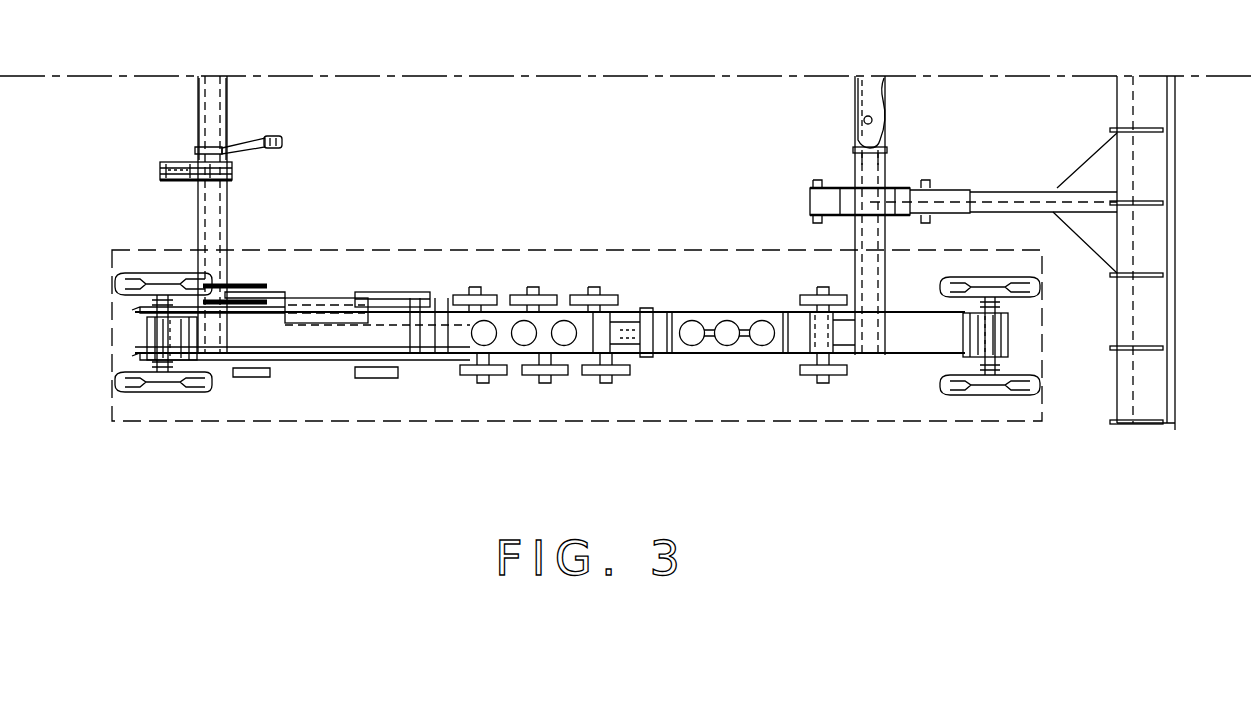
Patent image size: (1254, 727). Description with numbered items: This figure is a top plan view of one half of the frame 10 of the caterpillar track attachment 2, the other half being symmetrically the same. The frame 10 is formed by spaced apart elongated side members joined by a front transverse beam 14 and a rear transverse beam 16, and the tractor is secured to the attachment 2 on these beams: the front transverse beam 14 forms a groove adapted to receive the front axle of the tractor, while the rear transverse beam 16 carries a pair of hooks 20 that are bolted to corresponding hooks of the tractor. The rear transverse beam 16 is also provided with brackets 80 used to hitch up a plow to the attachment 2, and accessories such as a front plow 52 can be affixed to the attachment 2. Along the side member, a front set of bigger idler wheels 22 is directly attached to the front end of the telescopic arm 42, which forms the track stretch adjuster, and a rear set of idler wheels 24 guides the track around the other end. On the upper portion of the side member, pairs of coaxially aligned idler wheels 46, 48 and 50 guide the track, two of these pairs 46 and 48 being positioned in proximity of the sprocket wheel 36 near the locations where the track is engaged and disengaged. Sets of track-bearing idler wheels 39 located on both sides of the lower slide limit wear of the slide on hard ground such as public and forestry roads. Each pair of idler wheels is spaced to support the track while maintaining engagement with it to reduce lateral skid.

The caterpillar track attachment 2 is at (570, 421).
The frame 10 is at (228, 200).
The front transverse beam 14 is at (880, 138).
The rear transverse beam 16 is at (210, 117).
The hooks 20 is at (283, 143).
The front set of idler wheels 22 is at (1033, 289).
The rear set of idler wheels 24 is at (115, 287).
The sprocket wheel 36 is at (300, 298).
The track-bearing idler wheels 39 is at (535, 372).
The telescopic arm 42 is at (693, 345).
The pair of idler wheels 46 is at (273, 370).
The pair of idler wheels 48 is at (390, 372).
The pair of idler wheels 50 is at (833, 306).
The front plow 52 is at (1155, 258).
The brackets 80 is at (160, 181).